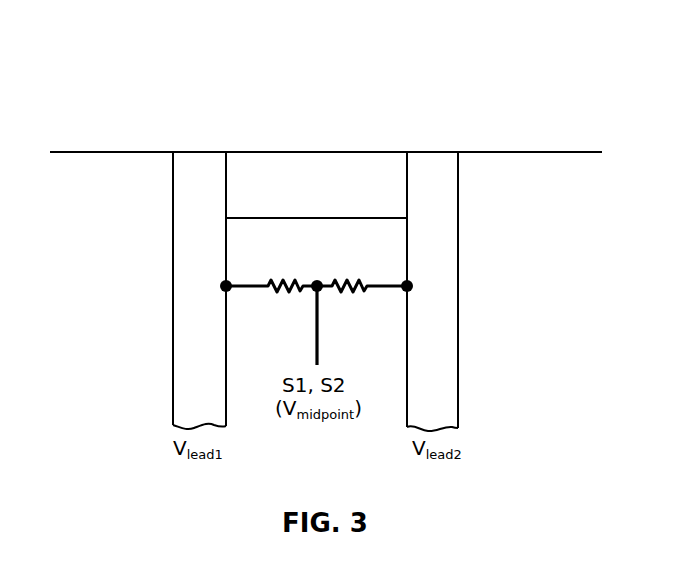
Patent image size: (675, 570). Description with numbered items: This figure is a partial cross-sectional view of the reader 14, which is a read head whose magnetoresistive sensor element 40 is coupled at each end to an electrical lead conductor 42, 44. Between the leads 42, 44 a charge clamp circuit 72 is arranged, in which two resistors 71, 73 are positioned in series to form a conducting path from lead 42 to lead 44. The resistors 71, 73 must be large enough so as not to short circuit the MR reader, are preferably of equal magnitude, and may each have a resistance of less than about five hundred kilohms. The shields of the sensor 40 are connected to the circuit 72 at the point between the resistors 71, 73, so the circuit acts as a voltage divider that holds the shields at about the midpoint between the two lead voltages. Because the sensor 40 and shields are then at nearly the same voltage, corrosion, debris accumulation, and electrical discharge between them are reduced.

The reader 14 is at (118, 106).
The magnetoresistive sensor element 40 is at (296, 151).
The electrical lead conductor 42 is at (173, 265).
The electrical lead conductor 44 is at (458, 267).
The resistor 71 is at (285, 278).
The circuit 72 is at (319, 317).
The resistor 73 is at (349, 278).